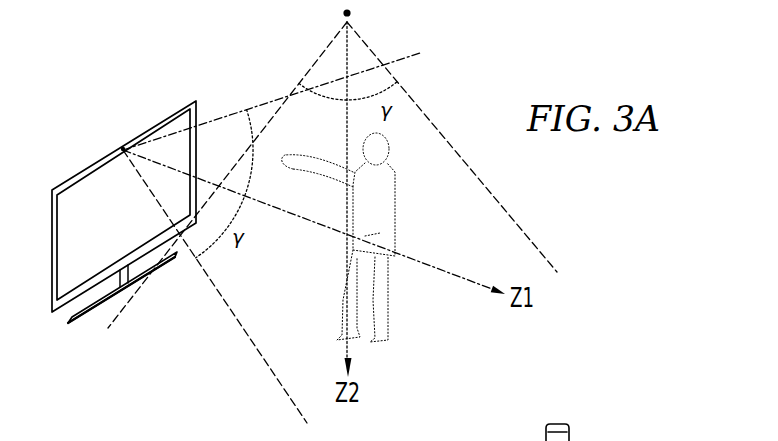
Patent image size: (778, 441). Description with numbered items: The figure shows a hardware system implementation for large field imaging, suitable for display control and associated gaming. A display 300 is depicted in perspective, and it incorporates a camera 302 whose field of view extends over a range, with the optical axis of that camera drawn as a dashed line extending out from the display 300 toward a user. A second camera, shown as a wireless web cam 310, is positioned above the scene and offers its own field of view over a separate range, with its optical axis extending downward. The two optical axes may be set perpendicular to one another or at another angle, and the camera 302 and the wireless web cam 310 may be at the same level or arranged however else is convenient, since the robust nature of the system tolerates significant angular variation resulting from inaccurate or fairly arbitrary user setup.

The display 300 is at (136, 98).
The camera 302 is at (123, 150).
The wireless web cam 310 is at (342, 13).